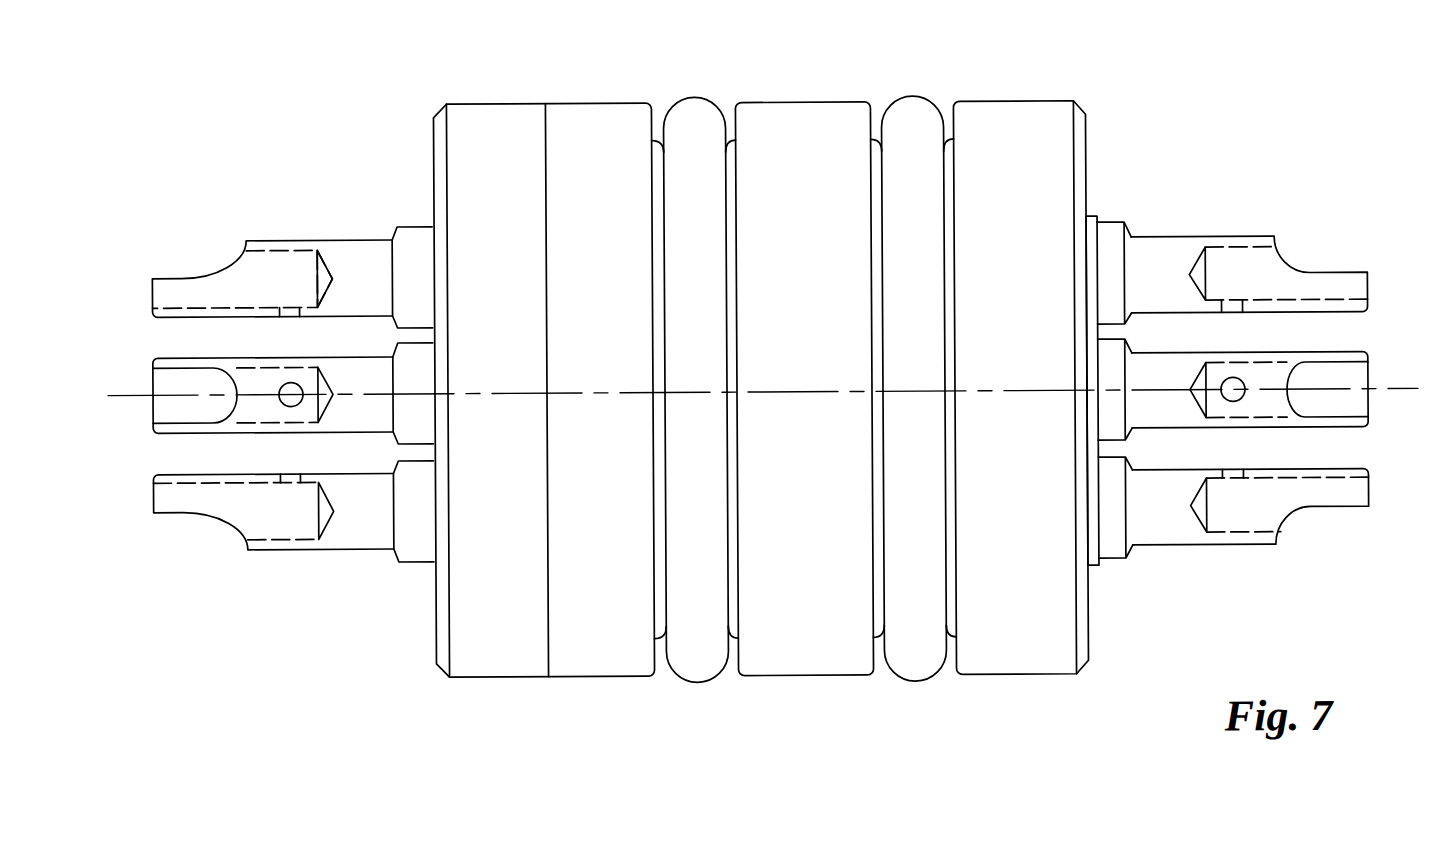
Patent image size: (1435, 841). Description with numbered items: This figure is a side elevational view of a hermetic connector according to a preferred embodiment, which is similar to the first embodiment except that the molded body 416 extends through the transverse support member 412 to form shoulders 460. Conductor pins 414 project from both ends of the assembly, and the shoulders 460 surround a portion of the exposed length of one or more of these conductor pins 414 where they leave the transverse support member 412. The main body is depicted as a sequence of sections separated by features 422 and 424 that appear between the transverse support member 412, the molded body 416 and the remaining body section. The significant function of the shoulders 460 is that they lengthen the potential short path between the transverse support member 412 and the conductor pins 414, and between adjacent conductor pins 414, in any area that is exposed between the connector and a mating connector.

The transverse support member 412 is at (488, 676).
The conductor pins 414 is at (181, 275).
The molded body 416 is at (825, 676).
The grooves / necks between sections 422 is at (732, 110).
The rounded rings 424 is at (700, 682).
The shoulders 460 is at (412, 224).